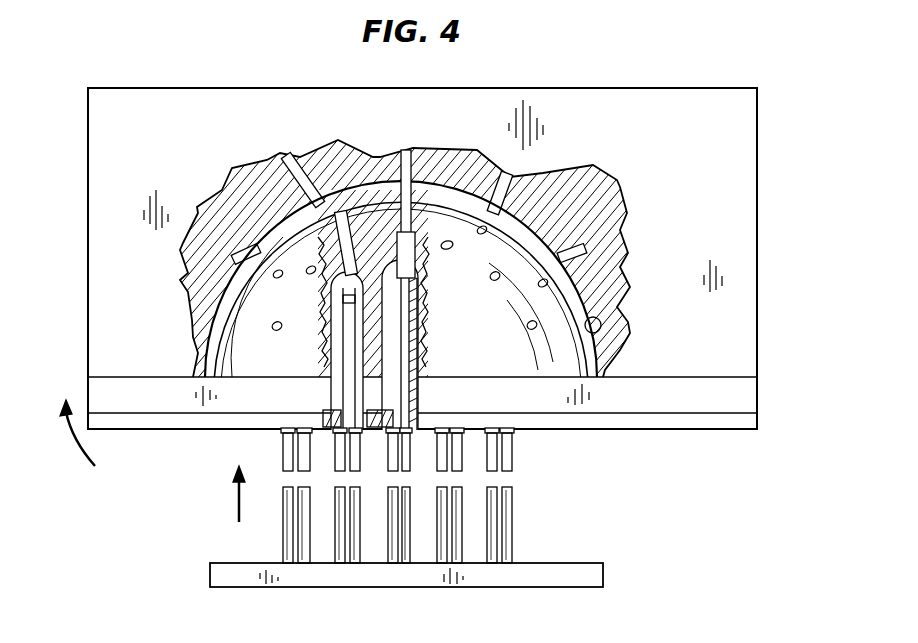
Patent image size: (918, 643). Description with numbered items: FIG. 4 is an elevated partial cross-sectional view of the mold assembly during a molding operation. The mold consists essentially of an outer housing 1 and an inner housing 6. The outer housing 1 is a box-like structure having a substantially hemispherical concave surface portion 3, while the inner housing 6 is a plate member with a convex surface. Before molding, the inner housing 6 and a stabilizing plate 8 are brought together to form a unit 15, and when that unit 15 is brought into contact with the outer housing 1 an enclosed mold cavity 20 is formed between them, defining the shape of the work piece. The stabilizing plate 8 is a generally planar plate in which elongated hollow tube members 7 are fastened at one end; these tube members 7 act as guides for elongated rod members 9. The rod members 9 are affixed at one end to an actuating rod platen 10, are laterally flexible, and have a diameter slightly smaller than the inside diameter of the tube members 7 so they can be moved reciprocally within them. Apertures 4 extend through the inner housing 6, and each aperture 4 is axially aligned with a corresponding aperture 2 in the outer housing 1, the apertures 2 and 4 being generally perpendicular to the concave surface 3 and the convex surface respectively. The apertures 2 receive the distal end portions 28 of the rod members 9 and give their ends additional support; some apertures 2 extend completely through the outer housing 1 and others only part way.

The outer housing 1 is at (699, 154).
The apertures 2 is at (579, 247).
The concave surface portion 3 is at (601, 325).
The apertures 4 is at (491, 280).
The inner housing 6 is at (729, 406).
The elongated hollow tube members 7 is at (346, 228).
The stabilizing plate 8 is at (680, 423).
The elongated rod members 9 is at (510, 551).
The actuating rod platen 10 is at (604, 583).
The unit 15 is at (77, 445).
The cavity 20 is at (590, 283).
The distal end portions 28 is at (421, 288).